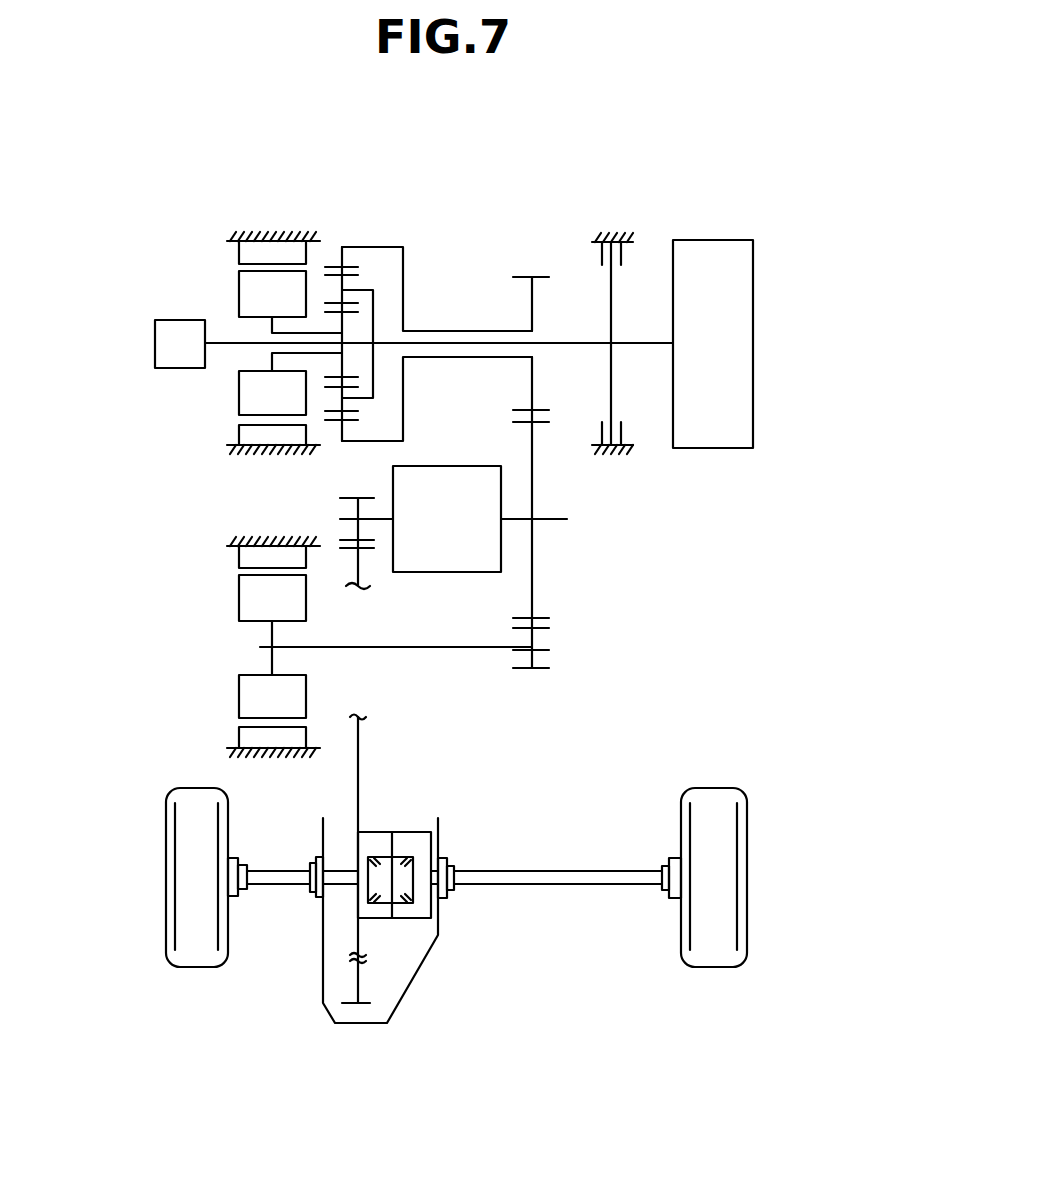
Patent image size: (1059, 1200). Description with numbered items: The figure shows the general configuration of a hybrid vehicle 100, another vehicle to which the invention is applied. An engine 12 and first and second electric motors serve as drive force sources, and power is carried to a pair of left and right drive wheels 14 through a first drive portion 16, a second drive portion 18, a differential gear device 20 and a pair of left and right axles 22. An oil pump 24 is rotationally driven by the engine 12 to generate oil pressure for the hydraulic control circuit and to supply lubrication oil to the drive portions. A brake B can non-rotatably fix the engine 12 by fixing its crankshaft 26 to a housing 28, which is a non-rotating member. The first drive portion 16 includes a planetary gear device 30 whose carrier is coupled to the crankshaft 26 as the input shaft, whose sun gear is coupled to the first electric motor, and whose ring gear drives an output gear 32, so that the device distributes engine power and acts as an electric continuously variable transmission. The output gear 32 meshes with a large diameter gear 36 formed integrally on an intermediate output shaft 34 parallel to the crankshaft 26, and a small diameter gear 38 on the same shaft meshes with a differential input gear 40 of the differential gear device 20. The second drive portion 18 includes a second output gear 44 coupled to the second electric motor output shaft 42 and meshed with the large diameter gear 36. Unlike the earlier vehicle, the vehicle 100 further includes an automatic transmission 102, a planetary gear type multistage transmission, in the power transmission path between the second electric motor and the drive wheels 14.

The hybrid vehicle 100 is at (647, 138).
The engine 12 is at (705, 443).
The drive wheels 14 is at (198, 956).
The first drive portion 16 is at (630, 386).
The second drive portion 18 is at (442, 629).
The differential gear device 20 is at (461, 921).
The axles 22 is at (277, 866).
The oil pump 24 is at (180, 360).
The crankshaft 26 is at (648, 348).
The housing 28 is at (602, 238).
The planetary gear device 30 is at (345, 226).
The output gear 32 is at (535, 410).
The intermediate output shaft 34 is at (548, 526).
The large diameter gear 36 is at (527, 425).
The small diameter gear 38 is at (345, 502).
The differential input gear 40 is at (352, 560).
The MG2 output shaft 42 is at (426, 651).
The second output gear 44 is at (546, 630).
The automatic transmission 102 is at (445, 562).
The brake B is at (601, 433).